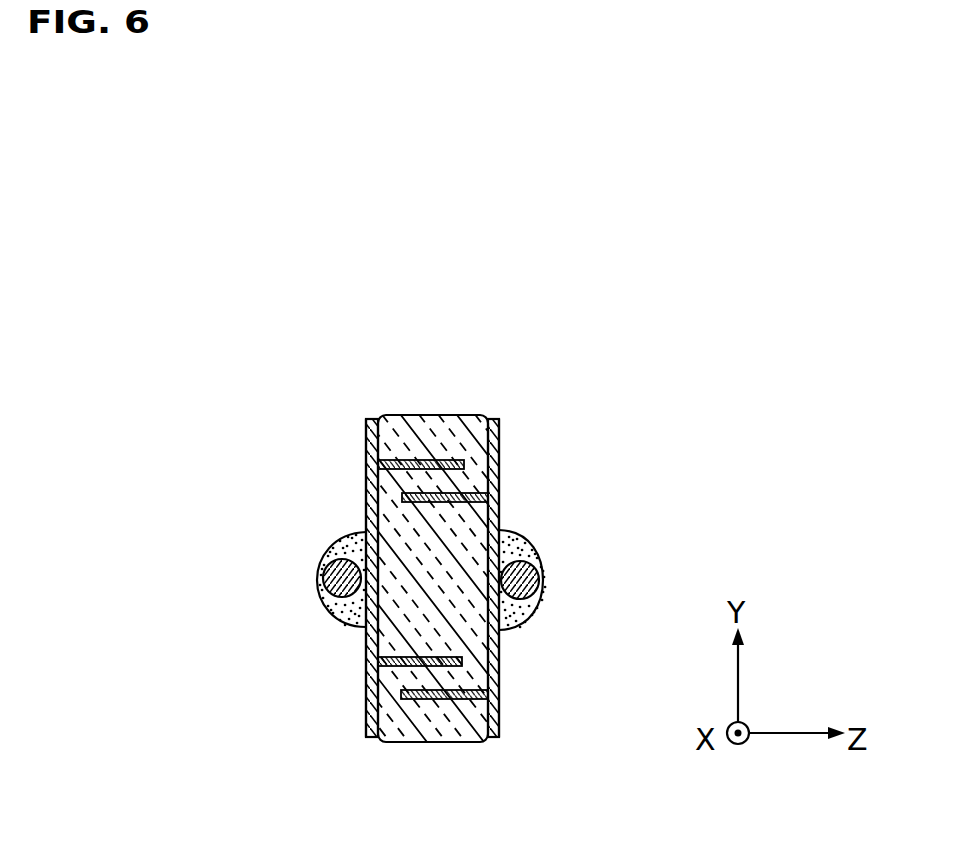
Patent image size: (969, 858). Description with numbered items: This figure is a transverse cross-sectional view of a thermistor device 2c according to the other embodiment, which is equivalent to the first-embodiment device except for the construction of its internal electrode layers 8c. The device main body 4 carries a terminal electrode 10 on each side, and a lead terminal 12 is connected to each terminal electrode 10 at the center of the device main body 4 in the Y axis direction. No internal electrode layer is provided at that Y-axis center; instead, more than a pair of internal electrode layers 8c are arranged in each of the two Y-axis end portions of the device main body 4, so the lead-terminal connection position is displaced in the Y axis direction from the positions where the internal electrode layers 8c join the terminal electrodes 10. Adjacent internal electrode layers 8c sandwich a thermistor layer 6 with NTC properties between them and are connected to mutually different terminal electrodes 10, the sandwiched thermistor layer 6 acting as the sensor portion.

The thermistor device 2c is at (527, 417).
The device main body 4 is at (438, 443).
The thermistor layer 6 is at (447, 482).
The internal electrode layer 8c is at (423, 458).
The terminal electrode 10 is at (366, 522).
The lead terminal 12 is at (318, 586).